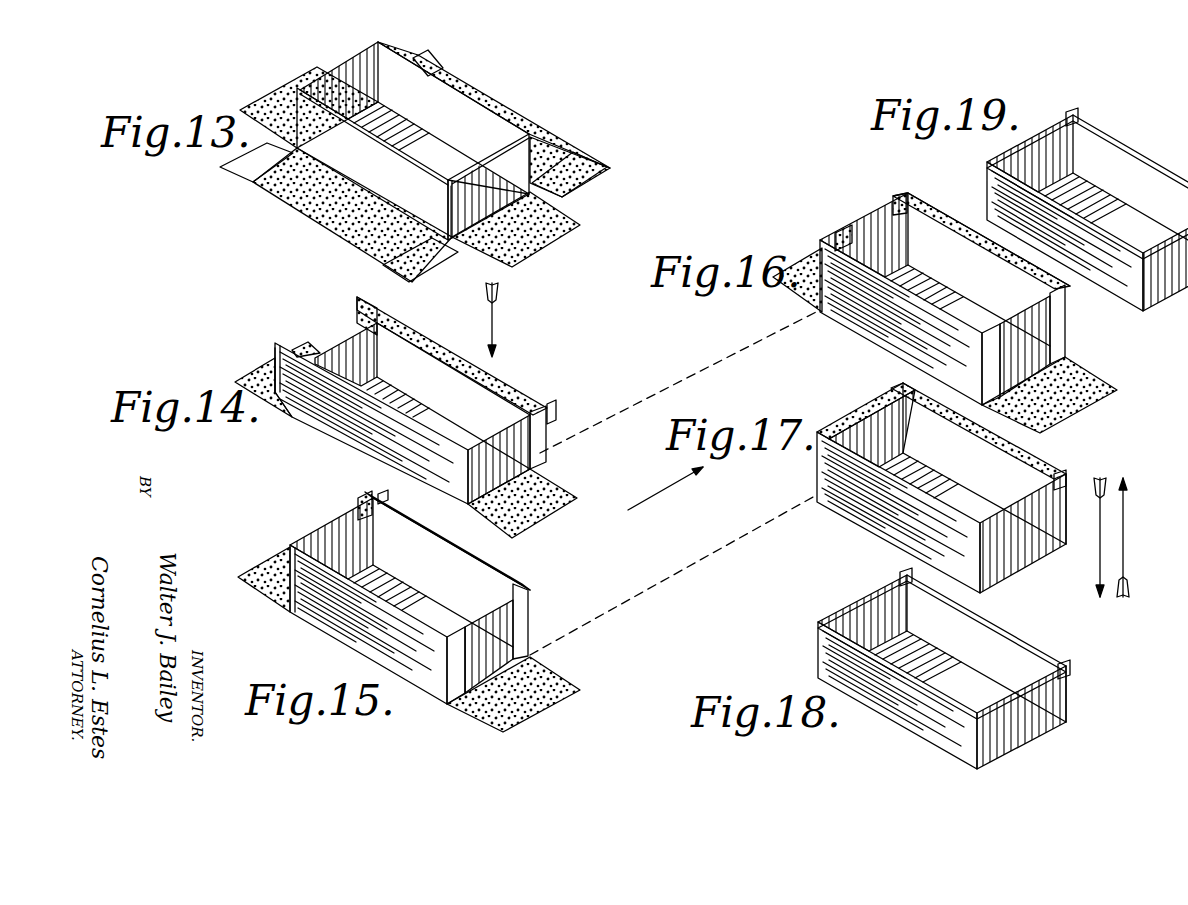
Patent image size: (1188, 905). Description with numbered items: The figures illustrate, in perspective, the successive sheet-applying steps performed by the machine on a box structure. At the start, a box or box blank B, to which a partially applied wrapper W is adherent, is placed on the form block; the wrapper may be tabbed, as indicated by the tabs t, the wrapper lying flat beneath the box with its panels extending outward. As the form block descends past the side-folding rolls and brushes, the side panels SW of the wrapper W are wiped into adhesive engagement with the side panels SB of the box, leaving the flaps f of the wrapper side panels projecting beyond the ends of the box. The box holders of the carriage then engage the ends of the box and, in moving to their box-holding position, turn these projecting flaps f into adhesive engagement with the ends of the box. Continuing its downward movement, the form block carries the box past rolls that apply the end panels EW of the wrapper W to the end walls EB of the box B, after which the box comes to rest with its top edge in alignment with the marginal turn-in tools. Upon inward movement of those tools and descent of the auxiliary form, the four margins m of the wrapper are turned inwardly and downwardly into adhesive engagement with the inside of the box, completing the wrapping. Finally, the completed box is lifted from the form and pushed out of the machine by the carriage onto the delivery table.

In FIG. 17, the end walls EB is at (880, 420).
In FIG. 13, the end walls EB is at (367, 65).
In FIG. 14, the end walls EB is at (422, 413).
In FIG. 15, the end walls EB is at (401, 595).
In FIG. 16, the end walls EB is at (1040, 327).
In FIG. 18, the end walls EB is at (867, 617).
In FIG. 19, the end walls EB is at (1065, 150).
In FIG. 17, the end panels EW is at (847, 415).
In FIG. 13, the end panels EW is at (272, 110).
In FIG. 14, the end panels EW is at (250, 377).
In FIG. 15, the end panels EW is at (263, 563).
In FIG. 16, the end panels EW is at (807, 257).
In FIG. 18, the end panels EW is at (1053, 700).
In FIG. 19, the end panels EW is at (1165, 258).
In FIG. 17, the side panels SB is at (983, 457).
In FIG. 13, the side panels SB is at (477, 112).
In FIG. 14, the side panels SB is at (427, 360).
In FIG. 15, the side panels SB is at (483, 590).
In FIG. 16, the side panels SB is at (920, 225).
In FIG. 18, the side panels SB is at (977, 645).
In FIG. 19, the side panels SB is at (1130, 172).
In FIG. 17, the side panels SW is at (920, 532).
In FIG. 13, the side panels SW is at (323, 213).
In FIG. 14, the side panels SW is at (490, 387).
In FIG. 18, the side panels SW is at (933, 723).
In FIG. 19, the side panels SW is at (1130, 287).
In FIG. 13, the box or box blank B is at (433, 107).
In FIG. 14, the box or box blank B is at (387, 357).
In FIG. 15, the box or box blank B is at (442, 572).
In FIG. 16, the box or box blank B is at (980, 269).
In FIG. 19, the box or box blank B is at (1113, 172).
In FIG. 13, the wrapper W is at (547, 148).
In FIG. 13, the tabs t is at (433, 60).
In FIG. 14, the tabs t is at (548, 413).
In FIG. 15, the tabs t is at (380, 510).
In FIG. 14, the flaps f is at (367, 300).
In FIG. 15, the flaps f is at (360, 510).
In FIG. 16, the flaps f is at (987, 340).
In FIG. 17, the margins m is at (870, 403).
In FIG. 14, the margins m is at (447, 367).
In FIG. 15, the margins m is at (473, 568).
In FIG. 16, the margins m is at (937, 212).
In FIG. 18, the margins m is at (887, 595).
In FIG. 19, the margins m is at (1053, 130).